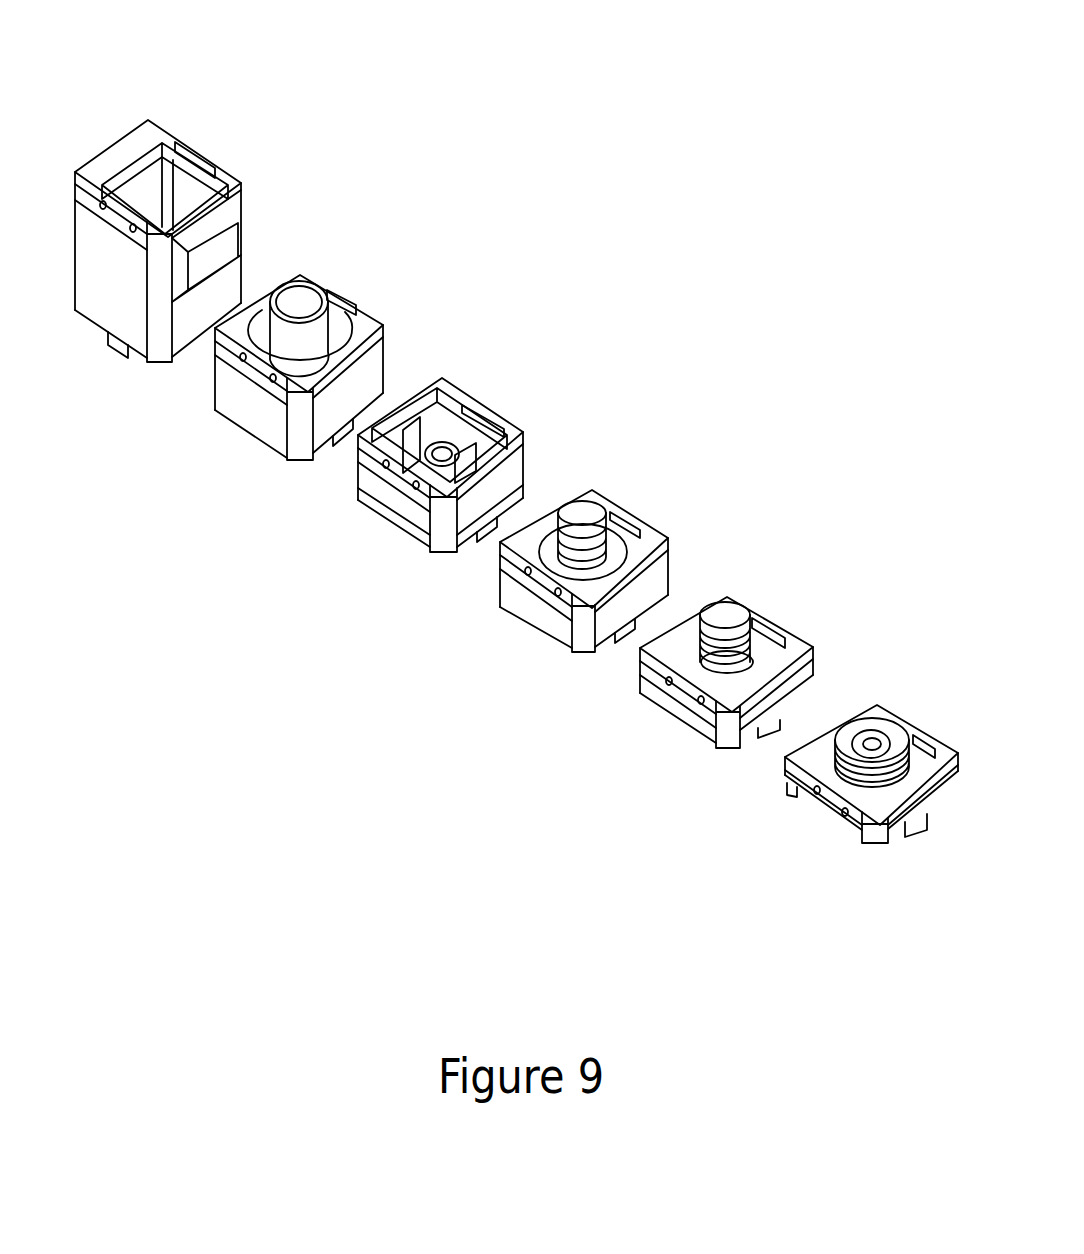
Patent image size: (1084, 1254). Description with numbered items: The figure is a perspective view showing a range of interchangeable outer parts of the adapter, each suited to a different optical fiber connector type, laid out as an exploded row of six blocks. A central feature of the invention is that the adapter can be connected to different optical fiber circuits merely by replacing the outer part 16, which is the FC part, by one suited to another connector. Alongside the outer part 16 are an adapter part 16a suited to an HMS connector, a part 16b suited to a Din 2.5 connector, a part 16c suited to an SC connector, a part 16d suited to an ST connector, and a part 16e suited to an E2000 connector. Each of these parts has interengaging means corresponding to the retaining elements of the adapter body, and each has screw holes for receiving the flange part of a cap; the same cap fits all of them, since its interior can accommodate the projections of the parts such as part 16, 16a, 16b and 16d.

The outer part 16 is at (802, 833).
The adapter part 16a is at (653, 735).
The adapter part 16b is at (512, 625).
The adapter part 16c is at (495, 377).
The adapter part 16d is at (368, 278).
The adapter part 16e is at (208, 123).